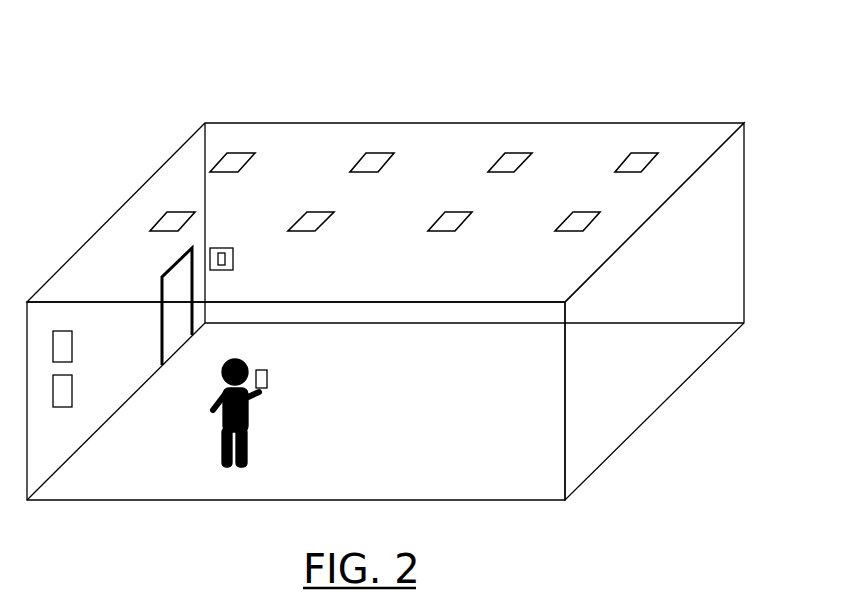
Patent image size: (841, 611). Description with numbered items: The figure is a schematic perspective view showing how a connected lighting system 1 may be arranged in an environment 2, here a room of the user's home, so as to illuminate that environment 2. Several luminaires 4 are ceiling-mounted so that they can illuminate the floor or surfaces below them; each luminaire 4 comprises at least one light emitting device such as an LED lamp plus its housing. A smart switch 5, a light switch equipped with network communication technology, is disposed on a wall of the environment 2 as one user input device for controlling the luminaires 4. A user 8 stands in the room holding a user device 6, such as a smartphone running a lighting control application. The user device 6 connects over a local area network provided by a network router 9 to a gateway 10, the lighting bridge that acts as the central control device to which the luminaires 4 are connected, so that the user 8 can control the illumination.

The lighting system 1 is at (728, 88).
The environment 2 is at (605, 123).
The luminaires 4 is at (452, 222).
The smart switch 5 is at (233, 250).
The user device 6 is at (267, 374).
The user 8 is at (212, 403).
The router 9 is at (72, 382).
The gateway 10 is at (72, 338).